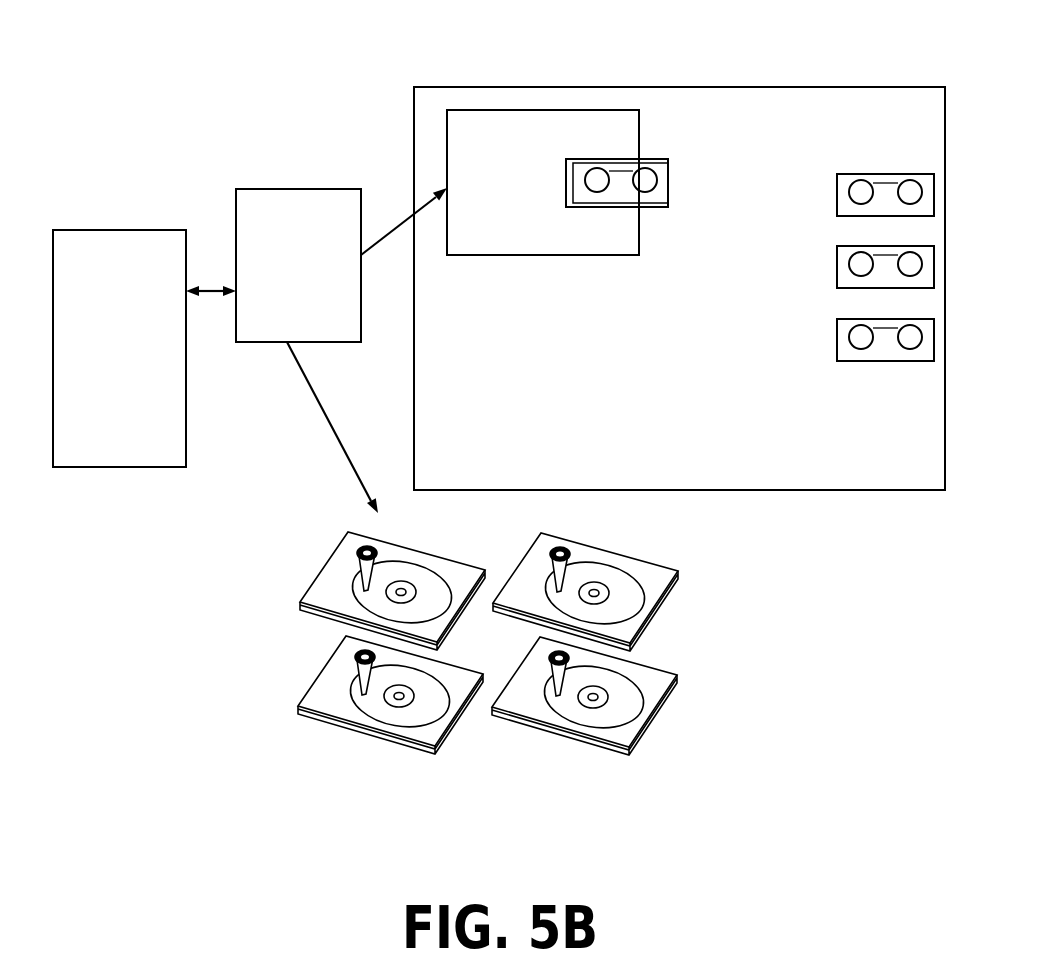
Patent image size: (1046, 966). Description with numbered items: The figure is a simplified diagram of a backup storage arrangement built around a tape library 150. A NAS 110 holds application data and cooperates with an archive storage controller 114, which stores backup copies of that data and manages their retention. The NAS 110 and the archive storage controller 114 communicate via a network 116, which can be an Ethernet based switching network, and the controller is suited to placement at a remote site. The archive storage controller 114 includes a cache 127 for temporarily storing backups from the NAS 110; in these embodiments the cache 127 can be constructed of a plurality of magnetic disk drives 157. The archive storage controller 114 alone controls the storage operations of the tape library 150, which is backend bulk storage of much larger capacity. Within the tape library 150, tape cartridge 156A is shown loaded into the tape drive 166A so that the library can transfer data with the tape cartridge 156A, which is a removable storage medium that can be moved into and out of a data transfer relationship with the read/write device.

The NAS 110 is at (119, 348).
The archive storage controller 114 is at (292, 189).
The network 116 is at (212, 258).
The cache 127 is at (275, 630).
The tape library 150 is at (613, 87).
The tape cartridge 156A is at (670, 192).
The magnetic disk drive 157 is at (317, 568).
The tape drive 166A is at (593, 255).